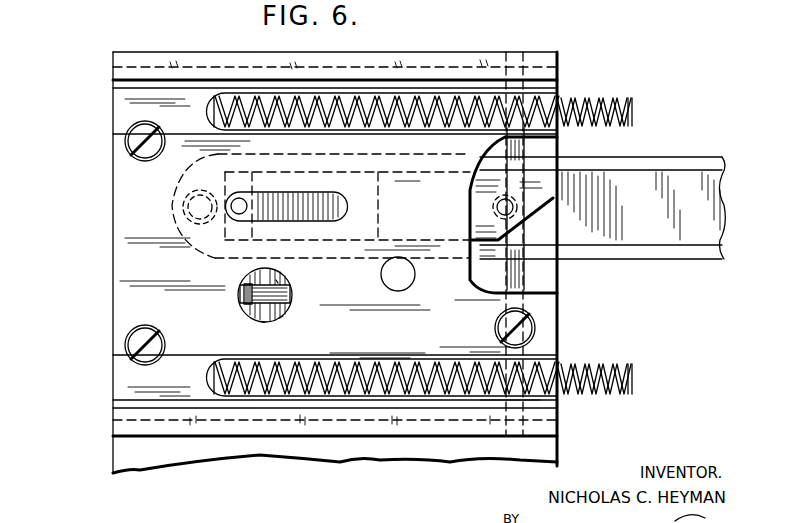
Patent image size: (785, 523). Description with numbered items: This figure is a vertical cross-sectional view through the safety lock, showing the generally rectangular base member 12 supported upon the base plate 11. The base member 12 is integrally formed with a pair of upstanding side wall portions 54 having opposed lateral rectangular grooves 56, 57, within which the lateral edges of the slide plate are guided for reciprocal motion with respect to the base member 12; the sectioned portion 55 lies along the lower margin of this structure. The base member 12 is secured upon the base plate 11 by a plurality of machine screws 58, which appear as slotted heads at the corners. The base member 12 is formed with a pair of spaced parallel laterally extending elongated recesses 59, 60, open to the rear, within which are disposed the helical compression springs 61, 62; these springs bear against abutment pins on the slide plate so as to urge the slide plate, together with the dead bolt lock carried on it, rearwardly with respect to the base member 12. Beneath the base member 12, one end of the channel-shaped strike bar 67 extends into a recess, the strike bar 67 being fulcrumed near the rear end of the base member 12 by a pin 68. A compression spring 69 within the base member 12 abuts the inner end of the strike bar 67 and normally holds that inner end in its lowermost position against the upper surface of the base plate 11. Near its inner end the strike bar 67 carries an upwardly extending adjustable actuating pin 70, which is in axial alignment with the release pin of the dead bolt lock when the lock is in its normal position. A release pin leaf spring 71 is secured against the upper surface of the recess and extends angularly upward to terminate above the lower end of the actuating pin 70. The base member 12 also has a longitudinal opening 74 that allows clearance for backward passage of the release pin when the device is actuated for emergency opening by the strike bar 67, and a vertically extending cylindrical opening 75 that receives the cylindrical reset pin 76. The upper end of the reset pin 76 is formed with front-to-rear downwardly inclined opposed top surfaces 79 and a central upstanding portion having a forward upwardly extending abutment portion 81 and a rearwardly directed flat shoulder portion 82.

The base plate 11 is at (124, 452).
The base member 12 is at (126, 257).
The upstanding side wall portions 54 is at (120, 60).
The lower flange 55 is at (118, 412).
The lateral rectangular groove 56 is at (212, 66).
The lateral rectangular groove 57 is at (320, 420).
The machine screws 58 is at (135, 132).
The elongated recess 59 is at (405, 100).
The elongated recess 60 is at (378, 396).
The helical compression spring 61 is at (588, 100).
The helical compression spring 62 is at (600, 364).
The strike bar 67 is at (652, 186).
The pin 68 is at (518, 282).
The compression spring 69 is at (178, 208).
The adjustable actuating pin 70 is at (238, 212).
The release pin leaf spring 71 is at (520, 192).
The longitudinal opening 74 is at (318, 222).
The cylindrical opening 75 is at (281, 318).
The reset pin 76 is at (249, 318).
The inclined top surfaces 79 is at (278, 283).
The abutment portion 81 is at (243, 300).
The flat shoulder portion 82 is at (282, 297).